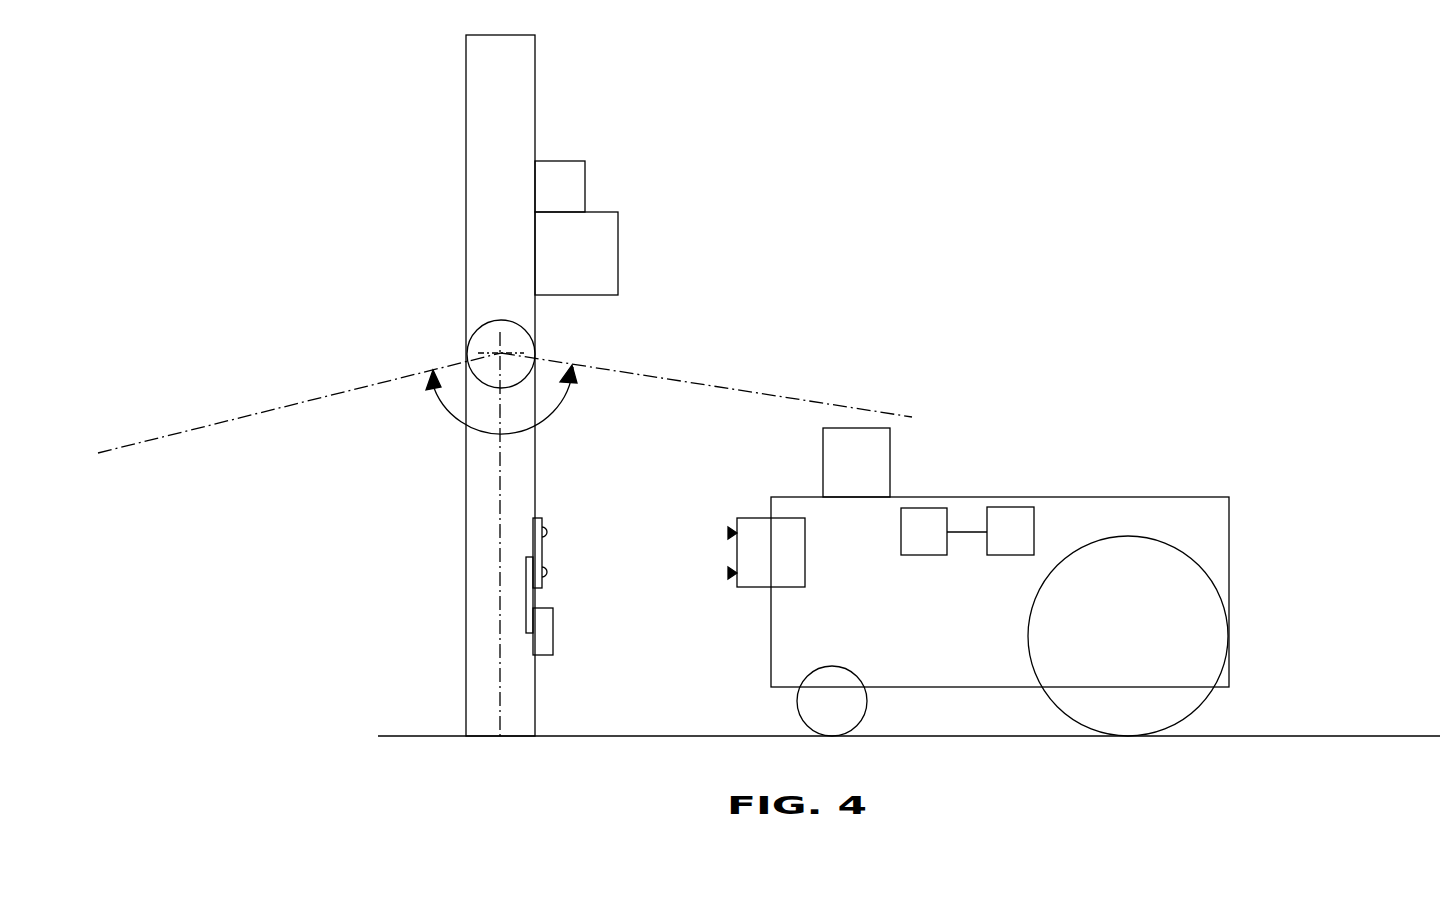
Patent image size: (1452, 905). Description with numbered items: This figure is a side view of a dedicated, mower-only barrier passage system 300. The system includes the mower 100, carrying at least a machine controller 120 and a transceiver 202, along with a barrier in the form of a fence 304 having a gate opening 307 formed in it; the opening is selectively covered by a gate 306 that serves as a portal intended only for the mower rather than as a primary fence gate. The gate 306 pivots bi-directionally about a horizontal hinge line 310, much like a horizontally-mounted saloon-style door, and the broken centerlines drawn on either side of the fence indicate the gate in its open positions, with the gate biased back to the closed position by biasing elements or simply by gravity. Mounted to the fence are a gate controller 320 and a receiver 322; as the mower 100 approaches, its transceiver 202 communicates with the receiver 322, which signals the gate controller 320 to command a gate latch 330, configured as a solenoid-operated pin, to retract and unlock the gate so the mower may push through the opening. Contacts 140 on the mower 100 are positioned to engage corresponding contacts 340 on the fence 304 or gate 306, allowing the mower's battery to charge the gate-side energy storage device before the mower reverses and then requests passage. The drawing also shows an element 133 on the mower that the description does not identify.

The mower 100 is at (942, 567).
The machine controller 120 is at (1010, 507).
The sensor 133 is at (890, 462).
The contacts 140 is at (729, 532).
The transceiver 202 is at (925, 555).
The barrier passage system 300 is at (846, 165).
The fence 304 is at (535, 72).
The gate 306 is at (297, 402).
The gate opening 307 is at (406, 545).
The horizontal hinge line 310 is at (497, 350).
The gate controller 320 is at (585, 182).
The receiver 322 is at (618, 250).
The gate latch 330 is at (553, 631).
The contacts 340 is at (547, 532).